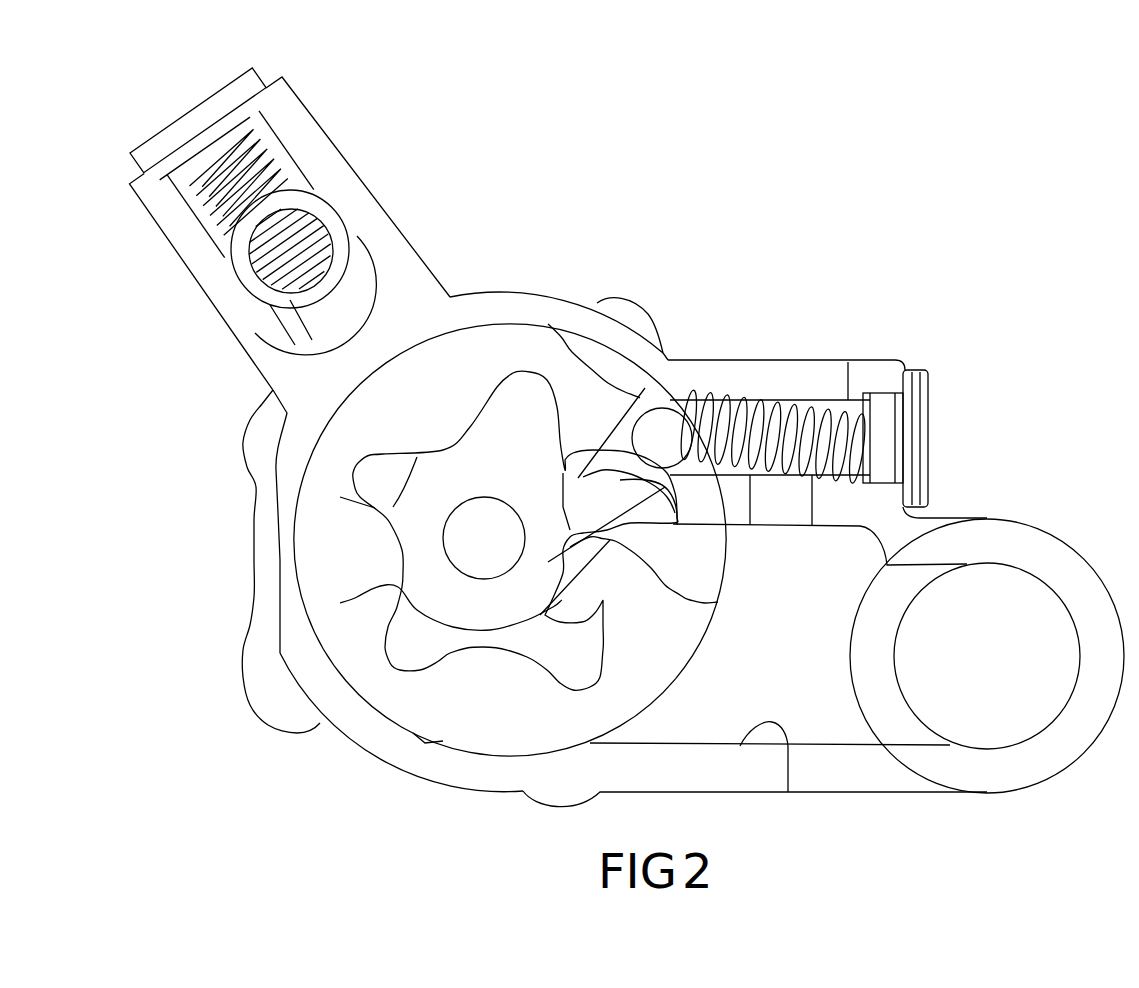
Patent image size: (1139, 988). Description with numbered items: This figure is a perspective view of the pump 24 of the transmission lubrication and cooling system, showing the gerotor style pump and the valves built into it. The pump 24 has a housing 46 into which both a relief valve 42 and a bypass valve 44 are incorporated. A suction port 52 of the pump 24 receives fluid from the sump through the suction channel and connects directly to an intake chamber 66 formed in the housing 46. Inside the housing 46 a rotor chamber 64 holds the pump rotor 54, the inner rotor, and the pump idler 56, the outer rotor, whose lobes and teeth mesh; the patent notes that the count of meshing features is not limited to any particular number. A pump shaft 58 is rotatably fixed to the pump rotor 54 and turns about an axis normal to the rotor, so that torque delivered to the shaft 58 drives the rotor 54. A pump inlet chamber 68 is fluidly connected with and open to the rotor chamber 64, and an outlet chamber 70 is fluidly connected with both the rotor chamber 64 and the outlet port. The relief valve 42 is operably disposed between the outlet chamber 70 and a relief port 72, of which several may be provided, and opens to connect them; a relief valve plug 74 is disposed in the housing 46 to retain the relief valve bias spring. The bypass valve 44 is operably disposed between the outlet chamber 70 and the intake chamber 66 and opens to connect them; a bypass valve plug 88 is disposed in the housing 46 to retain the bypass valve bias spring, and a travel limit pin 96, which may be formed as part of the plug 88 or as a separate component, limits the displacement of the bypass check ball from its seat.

The pump 24 is at (252, 594).
The relief valve 42 is at (358, 248).
The bypass valve 44 is at (797, 400).
The housing 46 is at (712, 793).
The suction port 52 is at (1071, 617).
The pump rotor 54 is at (714, 603).
The pump idler 56 is at (700, 647).
The pump shaft 58 is at (484, 538).
The rotor chamber 64 is at (660, 680).
The intake chamber 66 is at (788, 793).
The pump inlet chamber 68 is at (413, 733).
The outlet chamber 70 is at (482, 337).
The relief port 72 is at (250, 262).
The relief valve plug 74 is at (227, 83).
The bypass valve plug 88 is at (933, 388).
The travel limit pin 96 is at (853, 357).